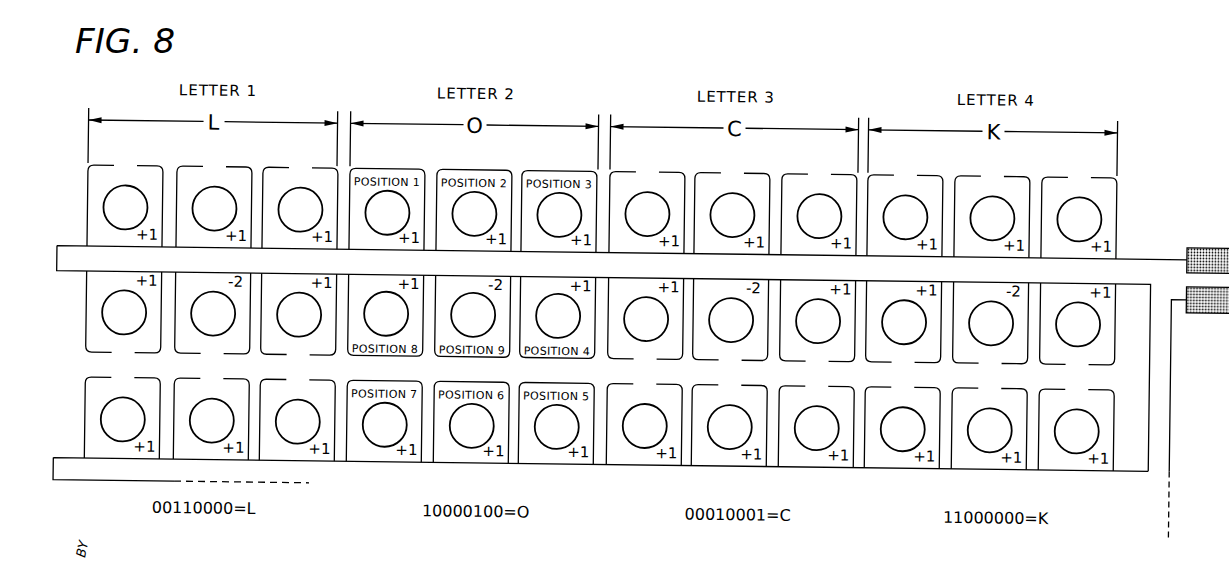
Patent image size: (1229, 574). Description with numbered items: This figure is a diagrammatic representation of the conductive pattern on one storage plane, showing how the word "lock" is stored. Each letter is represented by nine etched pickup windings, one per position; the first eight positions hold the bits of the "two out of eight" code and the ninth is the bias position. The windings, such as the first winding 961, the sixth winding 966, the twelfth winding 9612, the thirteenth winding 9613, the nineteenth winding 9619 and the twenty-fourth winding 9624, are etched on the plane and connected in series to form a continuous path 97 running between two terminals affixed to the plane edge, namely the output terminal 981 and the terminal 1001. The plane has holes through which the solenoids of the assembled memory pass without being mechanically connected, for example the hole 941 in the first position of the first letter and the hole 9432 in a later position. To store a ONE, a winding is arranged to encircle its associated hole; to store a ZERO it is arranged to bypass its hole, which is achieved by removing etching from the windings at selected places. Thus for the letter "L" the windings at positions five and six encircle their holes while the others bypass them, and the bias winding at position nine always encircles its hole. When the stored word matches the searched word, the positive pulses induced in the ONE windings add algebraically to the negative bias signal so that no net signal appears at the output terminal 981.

The solenoid hole 941 is at (124, 198).
The solenoid hole 9432 is at (736, 424).
The etched pickup winding 961 is at (109, 194).
The etched pickup winding 966 is at (548, 165).
The etched pickup winding 9612 is at (1117, 169).
The etched pickup winding 9613 is at (88, 306).
The etched pickup winding 9619 is at (662, 352).
The etched pickup winding 9624 is at (1100, 350).
The continuous path 97 is at (78, 272).
The output terminal 981 is at (1212, 234).
The terminal 1001 is at (1225, 300).